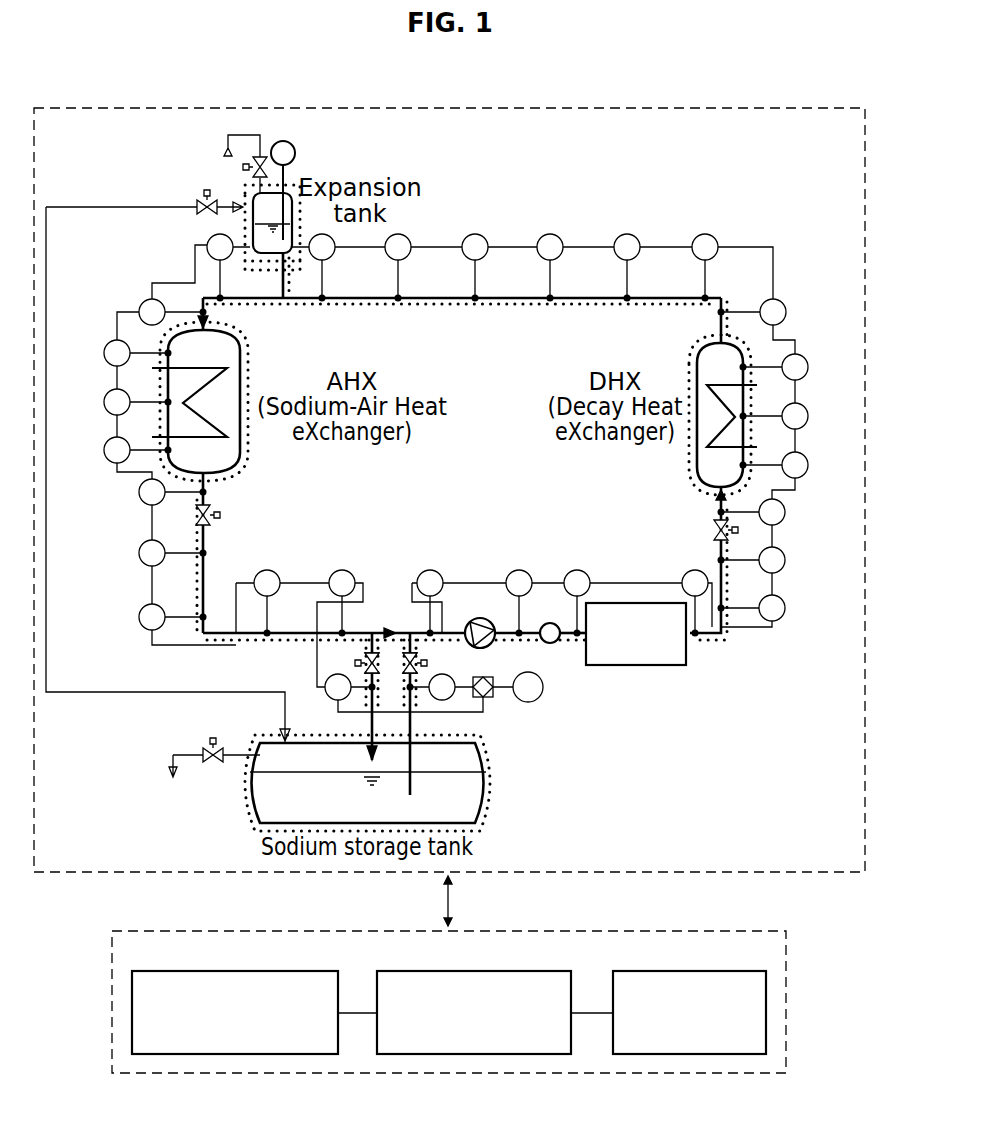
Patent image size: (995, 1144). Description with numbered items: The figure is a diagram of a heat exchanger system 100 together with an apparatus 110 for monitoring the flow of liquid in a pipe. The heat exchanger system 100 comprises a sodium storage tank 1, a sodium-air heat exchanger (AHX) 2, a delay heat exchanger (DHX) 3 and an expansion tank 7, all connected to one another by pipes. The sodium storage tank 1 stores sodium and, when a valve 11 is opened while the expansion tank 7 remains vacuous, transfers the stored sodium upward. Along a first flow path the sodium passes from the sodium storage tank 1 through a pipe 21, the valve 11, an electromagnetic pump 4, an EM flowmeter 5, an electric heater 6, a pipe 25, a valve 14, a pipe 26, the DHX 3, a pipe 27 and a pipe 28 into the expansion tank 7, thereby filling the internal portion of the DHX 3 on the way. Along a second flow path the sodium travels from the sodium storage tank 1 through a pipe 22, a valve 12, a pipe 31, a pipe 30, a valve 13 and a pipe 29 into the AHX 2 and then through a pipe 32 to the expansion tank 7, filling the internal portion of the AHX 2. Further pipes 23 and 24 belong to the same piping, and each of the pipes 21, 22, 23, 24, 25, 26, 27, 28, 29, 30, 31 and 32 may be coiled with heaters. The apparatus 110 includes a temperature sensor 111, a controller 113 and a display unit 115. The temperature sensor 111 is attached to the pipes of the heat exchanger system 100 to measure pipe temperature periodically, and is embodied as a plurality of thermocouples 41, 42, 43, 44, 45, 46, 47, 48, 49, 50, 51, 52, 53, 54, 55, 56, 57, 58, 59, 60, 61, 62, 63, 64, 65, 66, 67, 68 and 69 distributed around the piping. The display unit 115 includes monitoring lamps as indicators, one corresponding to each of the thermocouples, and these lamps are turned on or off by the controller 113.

The sodium storage tank 1 is at (262, 797).
The sodium-air heat exchanger (AHX) 2 is at (242, 371).
The delay heat exchanger (DHX) 3 is at (687, 370).
The electromagnetic (EM) pump 4 is at (478, 618).
The EM flowmeter 5 is at (548, 622).
The electric heater 6 is at (621, 603).
The expansion tank 7 is at (286, 192).
The valve 11 is at (427, 662).
The valve 12 is at (357, 663).
The valve 13 is at (221, 515).
The valve 14 is at (719, 532).
The pipe 21 is at (414, 724).
The pipe 22 is at (372, 718).
The pipe 23 is at (508, 640).
The pipe 24 is at (568, 641).
The pipe 25 is at (724, 630).
The pipe 26 is at (715, 503).
The pipe 27 is at (716, 328).
The pipe 28 is at (500, 300).
The pipe 29 is at (208, 493).
The pipe 30 is at (204, 586).
The pipe 31 is at (295, 631).
The pipe 32 is at (202, 313).
The thermocouple 41 is at (458, 698).
The thermocouple 42 is at (430, 570).
The thermocouple 43 is at (519, 570).
The thermocouple 44 is at (576, 570).
The thermocouple 45 is at (689, 572).
The thermocouple 46 is at (785, 609).
The thermocouple 47 is at (785, 561).
The thermocouple 48 is at (785, 513).
The thermocouple 49 is at (807, 466).
The thermocouple 50 is at (807, 417).
The thermocouple 51 is at (807, 368).
The thermocouple 52 is at (786, 314).
The thermocouple 53 is at (705, 234).
The thermocouple 54 is at (627, 234).
The thermocouple 55 is at (551, 234).
The thermocouple 56 is at (476, 234).
The thermocouple 57 is at (404, 233).
The thermocouple 58 is at (330, 258).
The thermocouple 59 is at (210, 241).
The thermocouple 60 is at (138, 308).
The thermocouple 61 is at (99, 355).
The thermocouple 62 is at (99, 404).
The thermocouple 63 is at (99, 452).
The thermocouple 64 is at (134, 494).
The thermocouple 65 is at (134, 555).
The thermocouple 66 is at (134, 619).
The thermocouple 67 is at (267, 570).
The thermocouple 68 is at (342, 570).
The thermocouple 69 is at (325, 685).
The heat exchanger system 100 is at (456, 100).
The apparatus for monitoring a flow of liquid in a pipe 110 is at (526, 931).
The temperature sensor 111 is at (236, 971).
The controller 113 is at (476, 971).
The display unit 115 is at (689, 971).